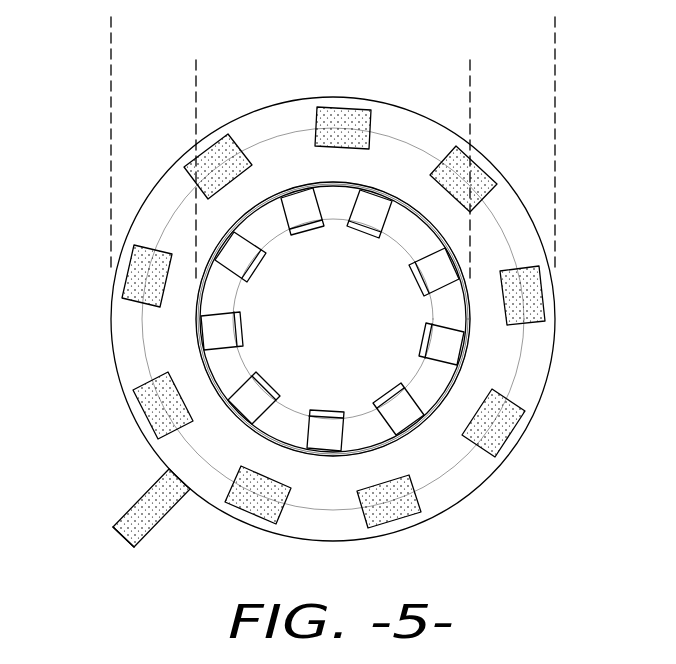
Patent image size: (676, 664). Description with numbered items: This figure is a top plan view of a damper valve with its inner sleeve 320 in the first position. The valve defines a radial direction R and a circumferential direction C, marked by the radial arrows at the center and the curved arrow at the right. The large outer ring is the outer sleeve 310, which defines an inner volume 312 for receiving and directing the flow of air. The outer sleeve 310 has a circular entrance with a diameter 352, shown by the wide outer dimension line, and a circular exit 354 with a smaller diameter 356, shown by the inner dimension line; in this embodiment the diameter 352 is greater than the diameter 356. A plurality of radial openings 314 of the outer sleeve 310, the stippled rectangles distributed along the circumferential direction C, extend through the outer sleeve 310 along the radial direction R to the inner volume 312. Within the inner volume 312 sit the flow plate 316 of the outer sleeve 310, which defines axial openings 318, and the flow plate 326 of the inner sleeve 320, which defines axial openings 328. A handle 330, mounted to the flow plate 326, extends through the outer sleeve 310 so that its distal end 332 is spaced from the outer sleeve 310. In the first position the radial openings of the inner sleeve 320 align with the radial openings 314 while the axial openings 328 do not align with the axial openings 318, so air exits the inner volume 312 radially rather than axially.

The outer sleeve 310 is at (442, 482).
The inner volume 312 is at (363, 414).
The radial openings 314 is at (378, 133).
The flow plate 316 is at (261, 222).
The axial openings 318 is at (226, 300).
The inner sleeve 320 is at (142, 282).
The flow plate 326 is at (410, 263).
The axial openings 328 is at (374, 217).
The handle 330 is at (146, 512).
The distal end 332 is at (136, 548).
The diameter 352 is at (555, 29).
The circular exit 354 is at (344, 459).
The diameter 356 is at (470, 71).
The radial direction R is at (457, 305).
The circumferential direction C is at (581, 241).